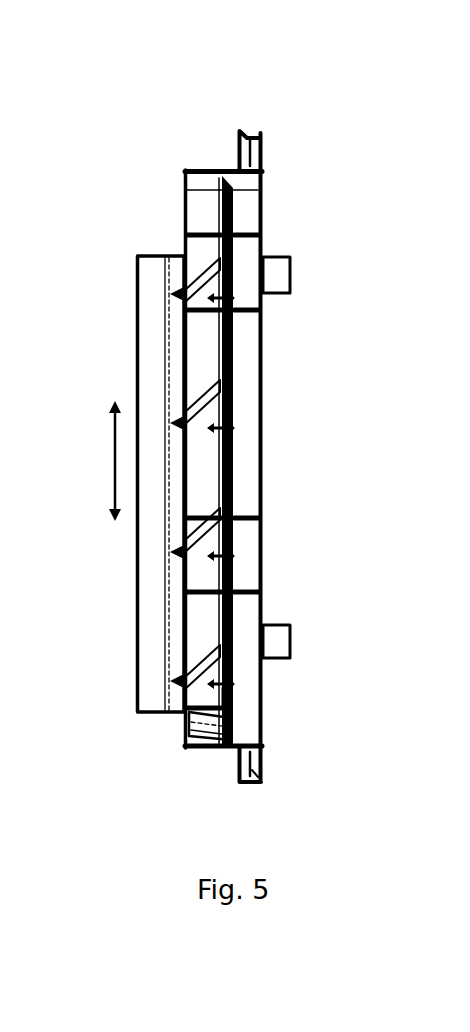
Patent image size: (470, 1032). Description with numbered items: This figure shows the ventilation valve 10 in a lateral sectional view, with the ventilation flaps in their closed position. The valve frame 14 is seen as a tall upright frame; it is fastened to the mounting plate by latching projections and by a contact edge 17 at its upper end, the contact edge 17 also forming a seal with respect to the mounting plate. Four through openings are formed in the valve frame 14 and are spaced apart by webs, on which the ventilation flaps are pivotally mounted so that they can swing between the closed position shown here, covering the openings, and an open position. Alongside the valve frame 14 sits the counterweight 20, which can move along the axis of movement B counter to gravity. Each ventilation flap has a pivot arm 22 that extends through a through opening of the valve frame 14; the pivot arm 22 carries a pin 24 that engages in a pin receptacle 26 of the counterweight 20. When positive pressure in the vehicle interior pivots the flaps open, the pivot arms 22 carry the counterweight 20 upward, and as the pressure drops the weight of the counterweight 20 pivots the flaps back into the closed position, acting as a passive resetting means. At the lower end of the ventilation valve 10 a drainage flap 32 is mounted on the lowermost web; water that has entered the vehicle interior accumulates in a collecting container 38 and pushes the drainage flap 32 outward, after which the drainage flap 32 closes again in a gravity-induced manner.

The ventilation valve 10 is at (197, 142).
The valve frame 14 is at (263, 164).
The contact edge 17 is at (241, 130).
The counterweight 20 is at (143, 272).
The pivot arm 22 is at (210, 278).
The pin 24 is at (187, 540).
The pin receptacle 26 is at (183, 550).
The drainage flap 32 is at (230, 723).
The collecting container 38 is at (190, 727).